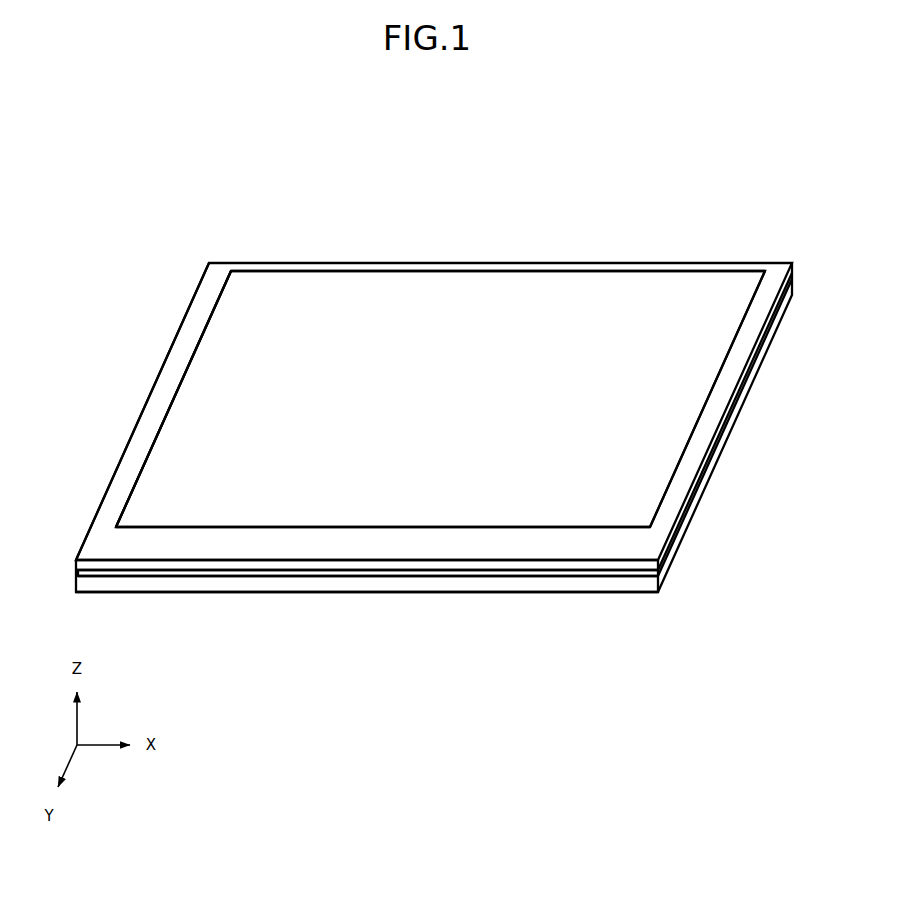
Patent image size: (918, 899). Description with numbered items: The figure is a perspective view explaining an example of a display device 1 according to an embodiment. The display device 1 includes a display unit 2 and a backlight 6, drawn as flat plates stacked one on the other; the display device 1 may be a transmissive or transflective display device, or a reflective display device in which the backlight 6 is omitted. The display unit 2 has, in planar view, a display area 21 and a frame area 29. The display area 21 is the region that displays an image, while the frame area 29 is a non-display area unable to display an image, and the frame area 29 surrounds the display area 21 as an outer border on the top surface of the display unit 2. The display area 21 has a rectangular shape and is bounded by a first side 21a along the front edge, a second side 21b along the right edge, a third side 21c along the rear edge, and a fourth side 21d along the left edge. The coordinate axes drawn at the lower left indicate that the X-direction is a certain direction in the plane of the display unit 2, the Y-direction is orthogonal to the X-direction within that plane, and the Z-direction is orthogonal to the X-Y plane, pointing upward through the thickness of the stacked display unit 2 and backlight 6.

The display device 1 is at (771, 162).
The display unit 2 is at (623, 567).
The backlight 6 is at (590, 587).
The display area 21 is at (310, 283).
The first side 21a is at (418, 527).
The second side 21b is at (712, 392).
The third side 21c is at (482, 268).
The fourth side 21d is at (173, 397).
The frame area 29 is at (187, 355).